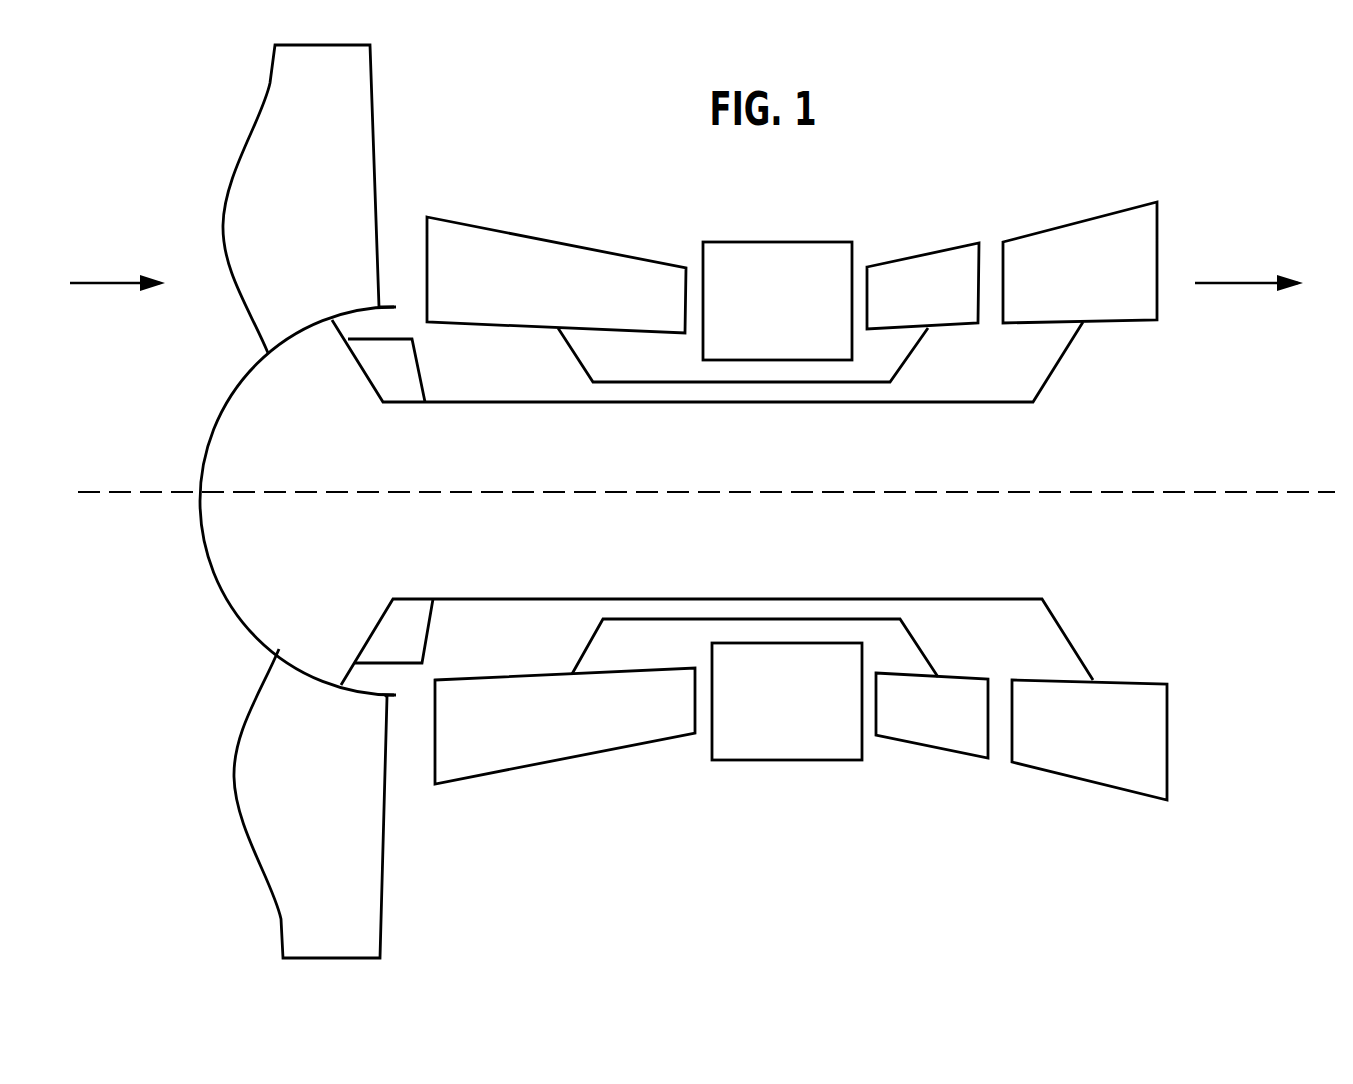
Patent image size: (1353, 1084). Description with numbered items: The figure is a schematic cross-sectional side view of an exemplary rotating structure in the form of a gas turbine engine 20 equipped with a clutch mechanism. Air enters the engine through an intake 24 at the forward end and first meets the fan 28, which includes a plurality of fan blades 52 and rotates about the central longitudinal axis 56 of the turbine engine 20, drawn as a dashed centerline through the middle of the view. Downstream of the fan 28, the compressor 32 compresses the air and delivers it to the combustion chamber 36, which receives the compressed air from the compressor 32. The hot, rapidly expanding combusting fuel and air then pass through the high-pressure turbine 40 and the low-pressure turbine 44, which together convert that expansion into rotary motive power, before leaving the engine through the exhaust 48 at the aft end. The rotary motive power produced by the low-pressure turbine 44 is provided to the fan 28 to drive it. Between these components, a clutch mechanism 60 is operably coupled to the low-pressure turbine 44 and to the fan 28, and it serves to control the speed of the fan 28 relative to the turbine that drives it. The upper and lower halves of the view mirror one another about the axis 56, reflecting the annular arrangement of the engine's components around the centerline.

The gas turbine engine 20 is at (186, 163).
The intake 24 is at (112, 283).
The fan 28 is at (360, 166).
The compressor 32 is at (550, 258).
The combustion chamber 36 is at (793, 263).
The high-pressure turbine 40 is at (960, 275).
The low-pressure turbine 44 is at (1112, 252).
The exhaust 48 is at (1250, 283).
The fan blades 52 is at (340, 100).
The central longitudinal axis 56 is at (157, 492).
The clutch mechanism 60 is at (398, 372).